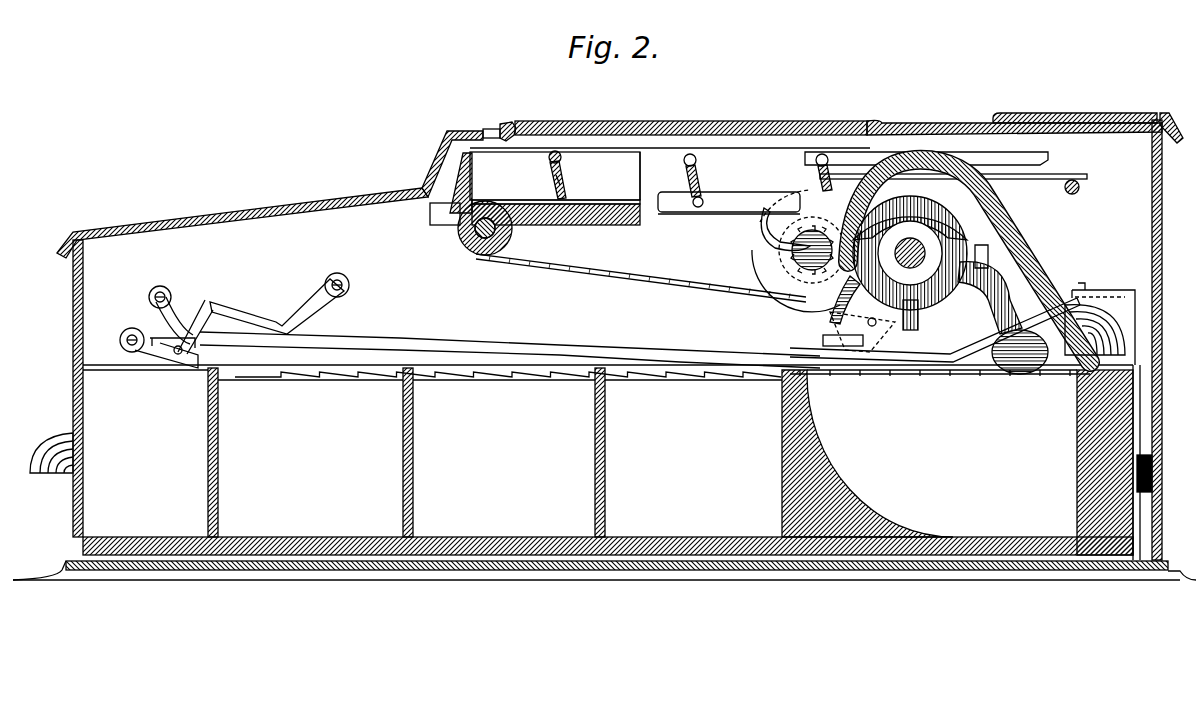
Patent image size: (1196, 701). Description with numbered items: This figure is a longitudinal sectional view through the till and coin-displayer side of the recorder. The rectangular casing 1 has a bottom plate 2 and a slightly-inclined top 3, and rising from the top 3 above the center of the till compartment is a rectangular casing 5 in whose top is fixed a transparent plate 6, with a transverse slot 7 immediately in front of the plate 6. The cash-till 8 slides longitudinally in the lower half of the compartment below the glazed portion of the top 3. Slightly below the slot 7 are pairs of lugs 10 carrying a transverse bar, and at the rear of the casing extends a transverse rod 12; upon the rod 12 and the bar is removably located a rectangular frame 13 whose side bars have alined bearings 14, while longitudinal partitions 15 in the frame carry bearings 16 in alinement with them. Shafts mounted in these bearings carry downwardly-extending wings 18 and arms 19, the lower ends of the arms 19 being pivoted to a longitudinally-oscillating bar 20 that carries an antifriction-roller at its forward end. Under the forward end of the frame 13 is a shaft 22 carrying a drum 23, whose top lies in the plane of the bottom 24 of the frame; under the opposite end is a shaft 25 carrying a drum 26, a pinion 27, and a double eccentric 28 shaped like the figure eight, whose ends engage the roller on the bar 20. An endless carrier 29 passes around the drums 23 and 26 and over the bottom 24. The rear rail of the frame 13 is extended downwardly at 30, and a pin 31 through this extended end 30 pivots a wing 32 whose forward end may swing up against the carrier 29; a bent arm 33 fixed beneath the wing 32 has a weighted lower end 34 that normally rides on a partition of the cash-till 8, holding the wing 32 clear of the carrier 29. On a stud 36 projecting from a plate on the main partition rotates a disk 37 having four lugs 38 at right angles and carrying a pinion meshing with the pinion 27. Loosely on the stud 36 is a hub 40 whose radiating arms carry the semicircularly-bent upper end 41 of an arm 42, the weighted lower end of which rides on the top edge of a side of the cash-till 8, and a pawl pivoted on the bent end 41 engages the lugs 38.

The rectangular casing 1 is at (73, 301).
The bottom plate 2 is at (580, 568).
The slightly-inclined top 3 is at (335, 203).
The rectangular casing 5 is at (445, 150).
The transparent plate 6 is at (658, 124).
The slot 7 is at (490, 128).
The cash-till 8 is at (608, 461).
The lugs 10 is at (438, 214).
The rod 12 is at (1080, 186).
The rectangular frame 13 is at (1072, 156).
The alined bearings 14 is at (692, 154).
The partitions 15 is at (545, 182).
The bearings 16 is at (555, 152).
The wings 18 is at (556, 178).
The arms 19 is at (703, 182).
The longitudinally-oscillating bar 20 is at (766, 199).
The shaft 22 is at (498, 244).
The drum 23 is at (500, 240).
The bottom 24 is at (622, 212).
The shaft 25 is at (792, 251).
The drum 26 is at (818, 292).
The pinion 27 is at (797, 266).
The double eccentric 28 is at (766, 240).
The endless carrier 29 is at (648, 278).
The extended end 30 is at (868, 348).
The pin 31 is at (877, 326).
The wing 32 is at (822, 340).
The bent arm 33 is at (990, 282).
The weighted lower end 34 is at (1016, 356).
The stud 36 is at (955, 253).
The disk 37 is at (920, 210).
The lugs or projections 38 is at (920, 320).
The hub 40 is at (910, 260).
The semicircularly-bent upper end 41 is at (976, 230).
The arm 42 is at (1028, 274).